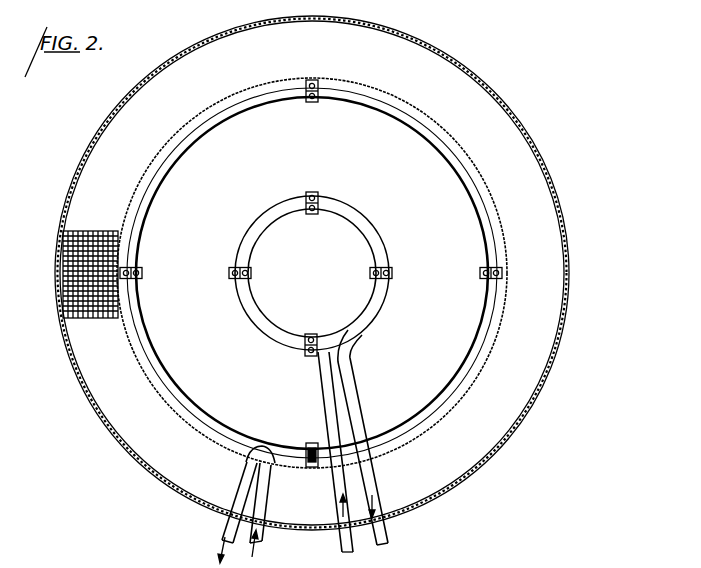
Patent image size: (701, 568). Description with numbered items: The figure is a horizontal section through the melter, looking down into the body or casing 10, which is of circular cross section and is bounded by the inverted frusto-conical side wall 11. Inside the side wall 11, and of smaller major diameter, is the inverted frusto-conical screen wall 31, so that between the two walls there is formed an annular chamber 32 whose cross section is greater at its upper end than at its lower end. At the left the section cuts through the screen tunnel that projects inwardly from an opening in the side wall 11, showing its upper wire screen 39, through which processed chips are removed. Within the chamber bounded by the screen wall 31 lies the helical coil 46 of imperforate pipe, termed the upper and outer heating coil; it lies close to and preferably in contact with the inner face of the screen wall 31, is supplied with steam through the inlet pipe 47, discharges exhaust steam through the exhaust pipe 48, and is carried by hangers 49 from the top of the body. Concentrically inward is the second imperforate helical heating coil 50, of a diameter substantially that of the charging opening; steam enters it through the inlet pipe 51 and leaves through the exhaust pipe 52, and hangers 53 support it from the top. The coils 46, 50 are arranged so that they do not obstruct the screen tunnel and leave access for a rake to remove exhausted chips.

The body or casing 10 is at (548, 149).
The side wall 11 is at (567, 238).
The annular chamber 32 is at (538, 298).
The screen wall 31 is at (147, 163).
The helical coil 46 is at (144, 208).
The upper wire screen 39 is at (85, 238).
The hangers 49 is at (318, 101).
The heating coil 50 is at (370, 315).
The hangers 53 is at (393, 272).
The inlet pipe 51 is at (330, 422).
The exhaust pipe 52 is at (373, 472).
The inlet pipe 47 is at (268, 505).
The exhaust pipe 48 is at (220, 525).